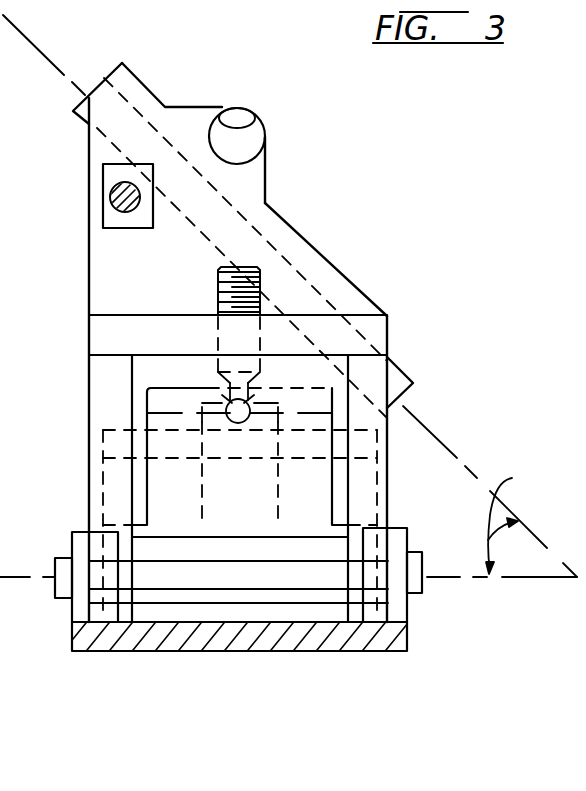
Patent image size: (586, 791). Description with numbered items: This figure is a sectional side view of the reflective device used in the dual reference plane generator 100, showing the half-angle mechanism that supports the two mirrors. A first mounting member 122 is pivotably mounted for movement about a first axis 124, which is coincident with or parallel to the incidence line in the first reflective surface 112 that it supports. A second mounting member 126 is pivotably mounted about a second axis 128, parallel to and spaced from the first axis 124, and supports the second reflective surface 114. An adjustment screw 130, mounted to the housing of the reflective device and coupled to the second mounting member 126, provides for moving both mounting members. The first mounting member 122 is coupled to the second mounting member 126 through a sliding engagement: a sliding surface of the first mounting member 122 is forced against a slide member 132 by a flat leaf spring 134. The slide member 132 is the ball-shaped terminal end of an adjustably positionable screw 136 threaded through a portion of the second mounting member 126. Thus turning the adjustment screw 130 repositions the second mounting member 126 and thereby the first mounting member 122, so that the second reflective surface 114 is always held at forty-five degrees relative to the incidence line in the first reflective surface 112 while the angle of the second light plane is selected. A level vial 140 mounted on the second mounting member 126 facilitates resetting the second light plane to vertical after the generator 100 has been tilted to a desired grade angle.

The dual reference plane generator 100 is at (418, 248).
The first reflective surface 112 is at (160, 388).
The second reflective surface 114 is at (205, 236).
The first mounting member 122 is at (325, 505).
The first axis 124 is at (217, 648).
The second mounting member 126 is at (96, 336).
The second axis 128 is at (443, 577).
The adjustment screw 130 is at (108, 191).
The slide member 132 is at (216, 398).
The flat leaf spring 134 is at (202, 502).
The adjustably positionable screw 136 is at (265, 278).
The level vial 140 is at (252, 117).